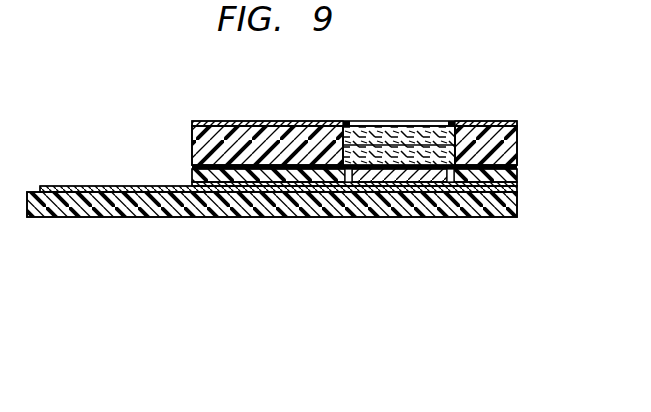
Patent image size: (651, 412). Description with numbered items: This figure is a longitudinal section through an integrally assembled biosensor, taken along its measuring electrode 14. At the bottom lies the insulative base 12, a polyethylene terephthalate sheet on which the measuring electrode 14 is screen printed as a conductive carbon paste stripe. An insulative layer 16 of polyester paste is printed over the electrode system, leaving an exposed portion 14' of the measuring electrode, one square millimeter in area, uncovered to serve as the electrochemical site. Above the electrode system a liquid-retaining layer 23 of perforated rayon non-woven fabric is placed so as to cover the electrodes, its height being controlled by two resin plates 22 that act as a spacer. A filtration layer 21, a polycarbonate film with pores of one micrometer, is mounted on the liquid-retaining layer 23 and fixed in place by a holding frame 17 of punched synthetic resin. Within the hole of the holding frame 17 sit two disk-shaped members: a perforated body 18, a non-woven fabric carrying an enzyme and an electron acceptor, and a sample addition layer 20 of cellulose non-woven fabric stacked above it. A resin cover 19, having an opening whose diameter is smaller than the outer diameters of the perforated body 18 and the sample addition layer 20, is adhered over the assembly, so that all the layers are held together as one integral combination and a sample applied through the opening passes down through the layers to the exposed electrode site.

The insulative base 12 is at (82, 208).
The measuring electrode 14 is at (278, 173).
The exposed portion of the measuring electrode 14' is at (399, 130).
The insulative layer 16 is at (518, 185).
The holding frame 17 is at (205, 145).
The perforated body 18 is at (427, 135).
The resin cover 19 is at (240, 121).
The sample addition layer 20 is at (402, 145).
The filtration layer 21 is at (490, 152).
The resin plates 22 is at (191, 176).
The liquid-retaining layer 23 is at (420, 193).